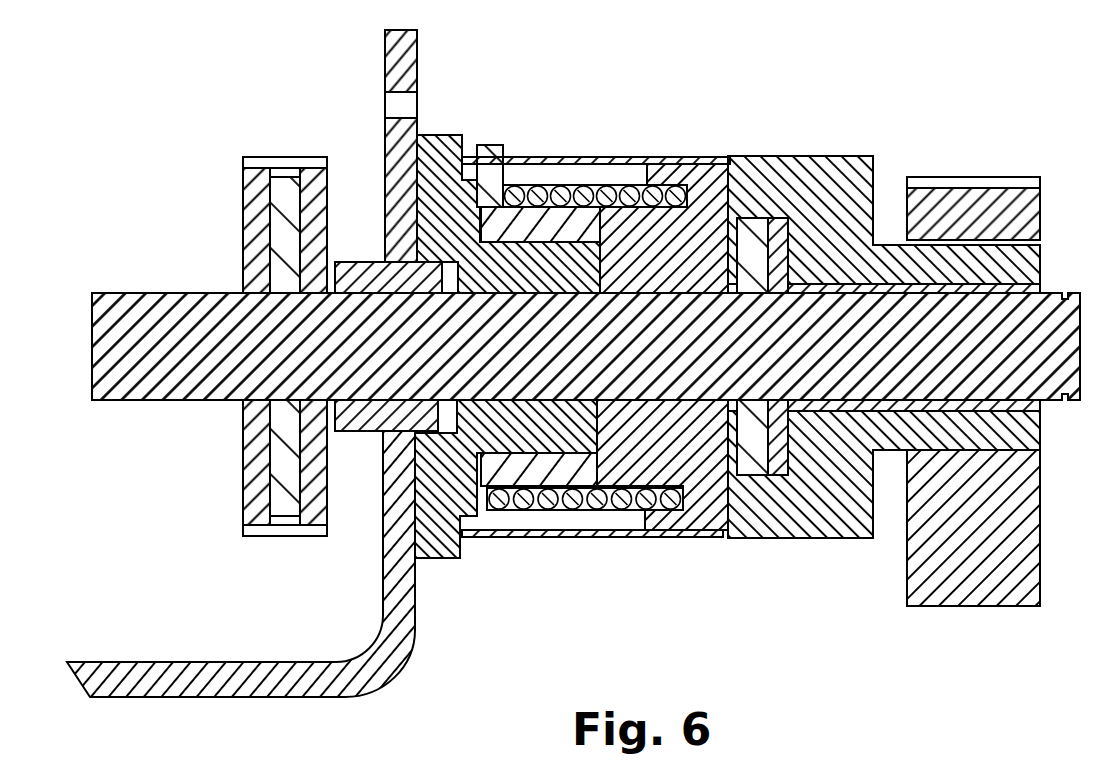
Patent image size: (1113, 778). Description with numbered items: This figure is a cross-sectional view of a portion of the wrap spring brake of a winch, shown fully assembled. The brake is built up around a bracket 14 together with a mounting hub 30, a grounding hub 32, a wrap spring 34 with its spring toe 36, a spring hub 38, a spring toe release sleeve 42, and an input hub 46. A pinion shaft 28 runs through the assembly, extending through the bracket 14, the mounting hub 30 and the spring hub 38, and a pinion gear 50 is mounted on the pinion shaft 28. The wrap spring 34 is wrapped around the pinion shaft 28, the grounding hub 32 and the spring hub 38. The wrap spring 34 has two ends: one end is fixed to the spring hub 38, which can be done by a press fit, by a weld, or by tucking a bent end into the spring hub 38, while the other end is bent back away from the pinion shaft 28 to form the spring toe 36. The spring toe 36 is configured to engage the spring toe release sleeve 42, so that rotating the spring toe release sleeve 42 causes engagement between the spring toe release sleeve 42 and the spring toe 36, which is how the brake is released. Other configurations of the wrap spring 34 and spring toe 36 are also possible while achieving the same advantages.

The bracket 14 is at (246, 663).
The pinion shaft 28 is at (136, 293).
The mounting hub 30 is at (433, 558).
The grounding hub 32 is at (507, 470).
The wrap spring 34 is at (648, 193).
The spring toe 36 is at (485, 150).
The spring hub 38 is at (692, 455).
The spring toe release sleeve 42 is at (594, 157).
The input hub 46 is at (828, 156).
The pinion gear 50 is at (308, 157).